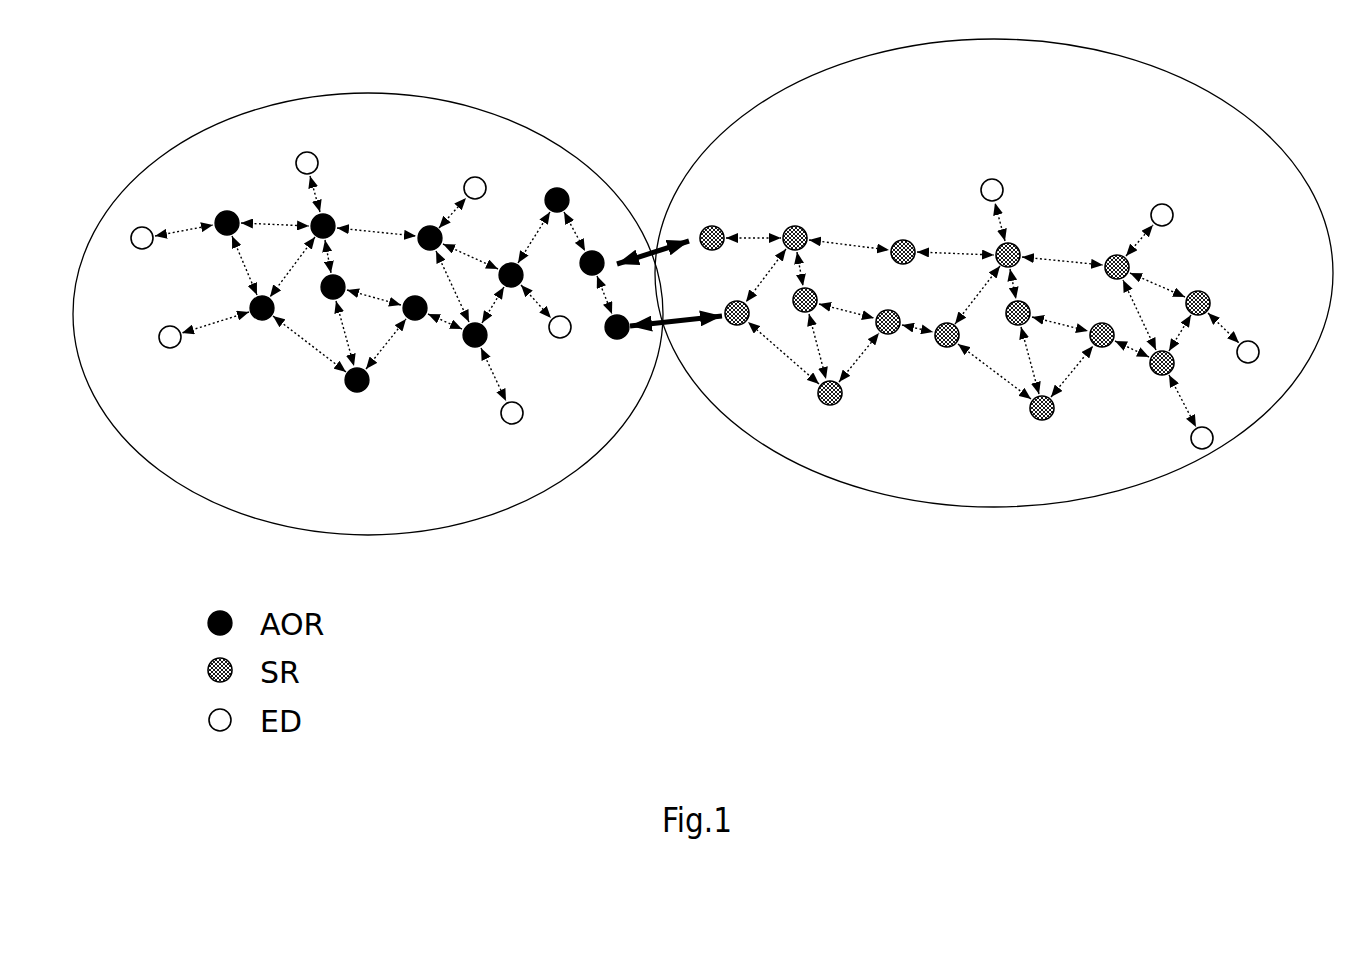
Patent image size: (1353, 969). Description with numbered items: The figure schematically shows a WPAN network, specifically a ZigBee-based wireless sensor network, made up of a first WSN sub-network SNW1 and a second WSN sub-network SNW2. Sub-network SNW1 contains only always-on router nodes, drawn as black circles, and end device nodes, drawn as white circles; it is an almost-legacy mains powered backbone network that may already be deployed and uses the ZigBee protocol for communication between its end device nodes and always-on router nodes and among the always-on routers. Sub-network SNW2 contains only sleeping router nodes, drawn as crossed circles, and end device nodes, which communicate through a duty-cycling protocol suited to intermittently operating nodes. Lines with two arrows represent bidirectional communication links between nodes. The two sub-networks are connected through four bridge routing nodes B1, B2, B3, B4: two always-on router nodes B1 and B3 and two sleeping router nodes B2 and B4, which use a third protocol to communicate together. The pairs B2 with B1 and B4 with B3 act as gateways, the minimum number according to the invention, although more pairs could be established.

The bridge routing node B1 is at (594, 252).
The bridge routing node B2 is at (709, 226).
The bridge routing node B3 is at (615, 339).
The bridge routing node B4 is at (736, 325).
The first WSN sub-network SNW1 is at (368, 314).
The second WSN sub-network SNW2 is at (994, 273).